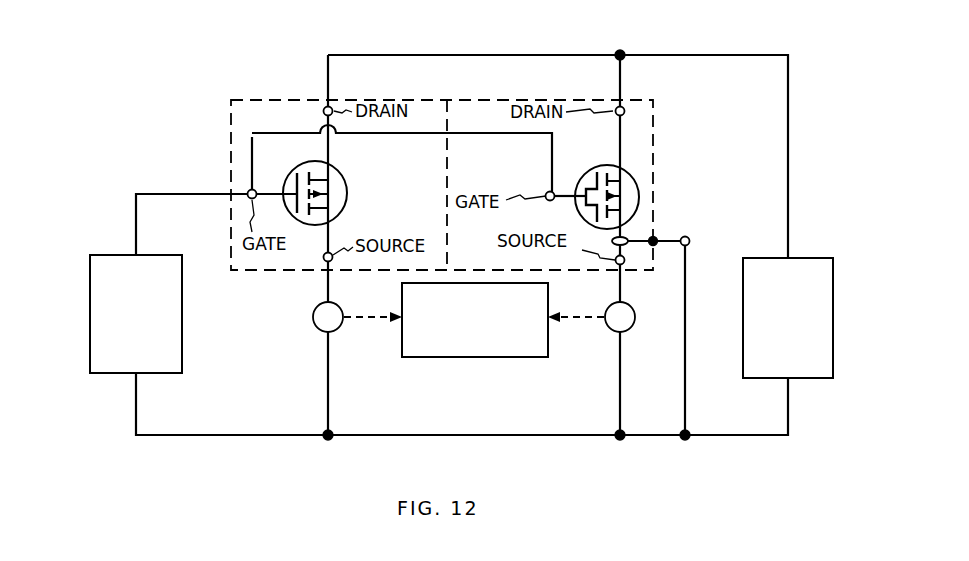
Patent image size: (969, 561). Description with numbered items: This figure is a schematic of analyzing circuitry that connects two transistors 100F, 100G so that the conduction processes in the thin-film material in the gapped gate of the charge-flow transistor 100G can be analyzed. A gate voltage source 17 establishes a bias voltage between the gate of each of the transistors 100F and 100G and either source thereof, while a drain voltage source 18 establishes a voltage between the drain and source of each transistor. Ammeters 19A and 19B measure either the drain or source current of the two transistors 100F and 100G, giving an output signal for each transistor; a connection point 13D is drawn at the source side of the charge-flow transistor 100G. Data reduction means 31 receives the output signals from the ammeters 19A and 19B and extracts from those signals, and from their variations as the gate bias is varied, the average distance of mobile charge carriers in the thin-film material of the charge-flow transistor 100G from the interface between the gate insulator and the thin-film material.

The gate voltage source 17 is at (90, 273).
The drain voltage source 18 is at (822, 258).
The ammeter 19A is at (306, 305).
The ammeter 19B is at (606, 306).
The data reduction means 31 is at (520, 351).
The transistor 100F is at (350, 191).
The charge-flow transistor 100G is at (636, 183).
The source connection / sensing point 13D is at (626, 238).